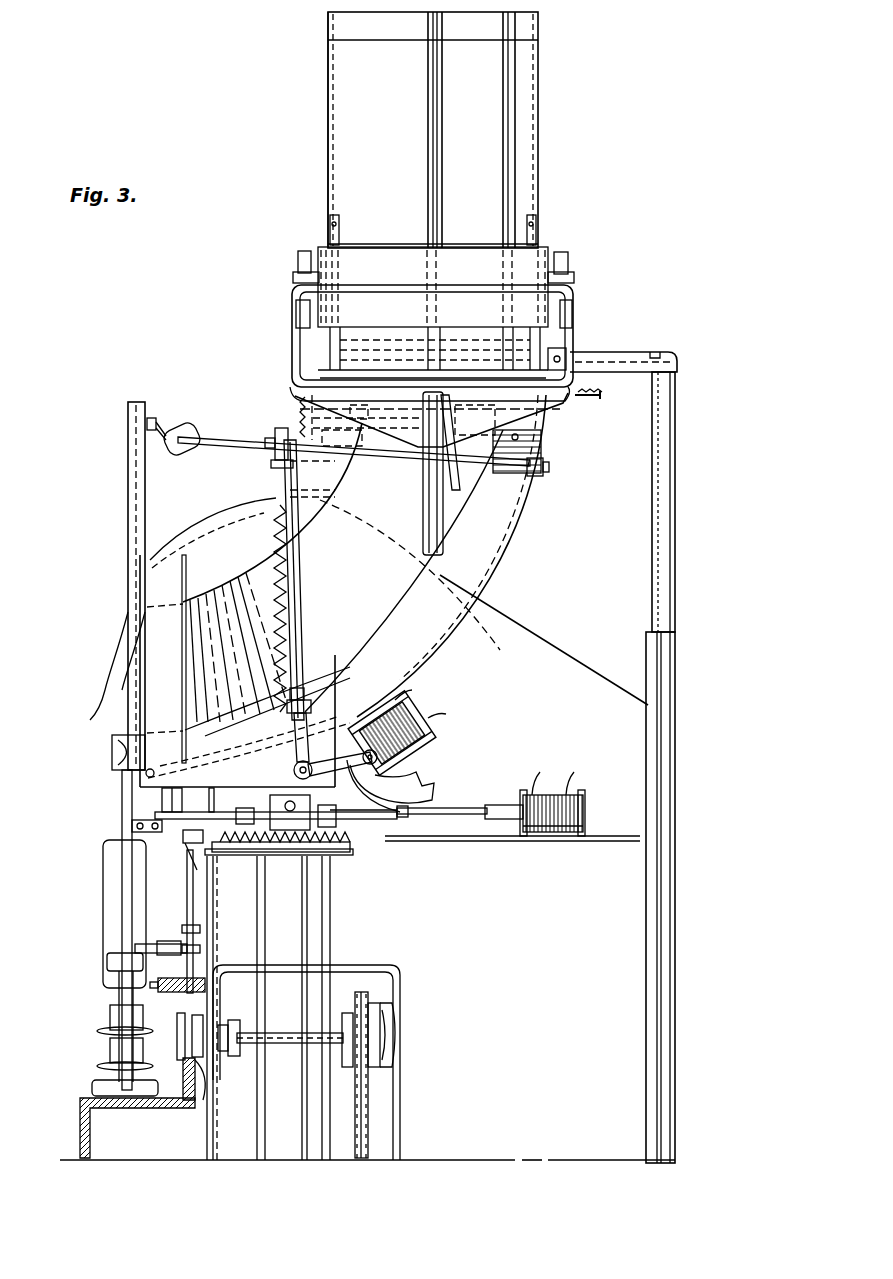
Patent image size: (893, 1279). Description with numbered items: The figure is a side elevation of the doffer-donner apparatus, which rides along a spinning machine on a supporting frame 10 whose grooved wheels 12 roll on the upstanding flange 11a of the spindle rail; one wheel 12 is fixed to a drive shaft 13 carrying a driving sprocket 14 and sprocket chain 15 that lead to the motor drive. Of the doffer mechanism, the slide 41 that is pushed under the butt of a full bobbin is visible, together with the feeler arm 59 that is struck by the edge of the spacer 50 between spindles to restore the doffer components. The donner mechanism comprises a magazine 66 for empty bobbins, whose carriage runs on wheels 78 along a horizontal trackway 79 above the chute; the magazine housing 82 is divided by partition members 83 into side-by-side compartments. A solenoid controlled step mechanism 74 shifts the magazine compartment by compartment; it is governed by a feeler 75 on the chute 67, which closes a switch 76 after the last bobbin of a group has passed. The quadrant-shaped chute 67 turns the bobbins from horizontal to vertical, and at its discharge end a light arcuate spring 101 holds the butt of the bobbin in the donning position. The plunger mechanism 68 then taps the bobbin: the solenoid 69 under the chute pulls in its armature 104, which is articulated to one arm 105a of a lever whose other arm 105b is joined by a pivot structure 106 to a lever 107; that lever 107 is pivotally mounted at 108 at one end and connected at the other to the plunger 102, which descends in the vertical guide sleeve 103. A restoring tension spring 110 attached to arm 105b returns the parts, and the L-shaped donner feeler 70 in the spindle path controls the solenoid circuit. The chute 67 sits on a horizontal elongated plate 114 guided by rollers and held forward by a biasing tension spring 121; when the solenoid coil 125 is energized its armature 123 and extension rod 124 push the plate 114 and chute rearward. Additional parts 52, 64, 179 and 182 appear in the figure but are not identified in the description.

The supporting frame 10 is at (364, 966).
The upstanding flange 11a is at (203, 1102).
The grooved wheels 12 is at (177, 1046).
The drive shaft 13 is at (278, 1033).
The driving sprocket 14 is at (392, 1006).
The sprocket chain 15 is at (368, 1100).
The slide 41 is at (150, 988).
The spacer 50 is at (103, 886).
The rod 52 is at (140, 802).
The feeler arm 59 is at (135, 946).
The brace 64 is at (545, 656).
The magazine 66 is at (548, 160).
The chute 67 is at (505, 550).
The solenoid actuated plunger mechanism 68 is at (210, 452).
The plunger actuating solenoid 69 is at (445, 721).
The donner feeler 70 is at (132, 828).
The solenoid controlled step mechanism 74 is at (426, 757).
The feeler 75 is at (458, 490).
The switch 76 is at (545, 450).
The wheels 78 is at (298, 256).
The horizontal trackway 79 is at (293, 277).
The magazine housing 82 is at (326, 146).
The partition members 83 is at (438, 70).
The light arcuate spring 101 is at (112, 760).
The plunger 102 is at (156, 418).
The vertical guide sleeve 103 is at (145, 487).
The armature 104 is at (424, 808).
The lever arm 105a is at (312, 801).
The lever arm 105b is at (287, 708).
The pivot structure 106 is at (280, 428).
The lever 107 is at (236, 424).
The pivot 108 is at (548, 470).
The restoring tension spring 110 is at (280, 632).
The horizontal elongated plate 114 is at (355, 846).
The biasing tension spring 121 is at (330, 857).
The armature 123 is at (512, 823).
The extension rod 124 is at (460, 818).
The solenoid coil 125 is at (570, 843).
The link 179 is at (300, 780).
The solenoid 182 is at (582, 800).